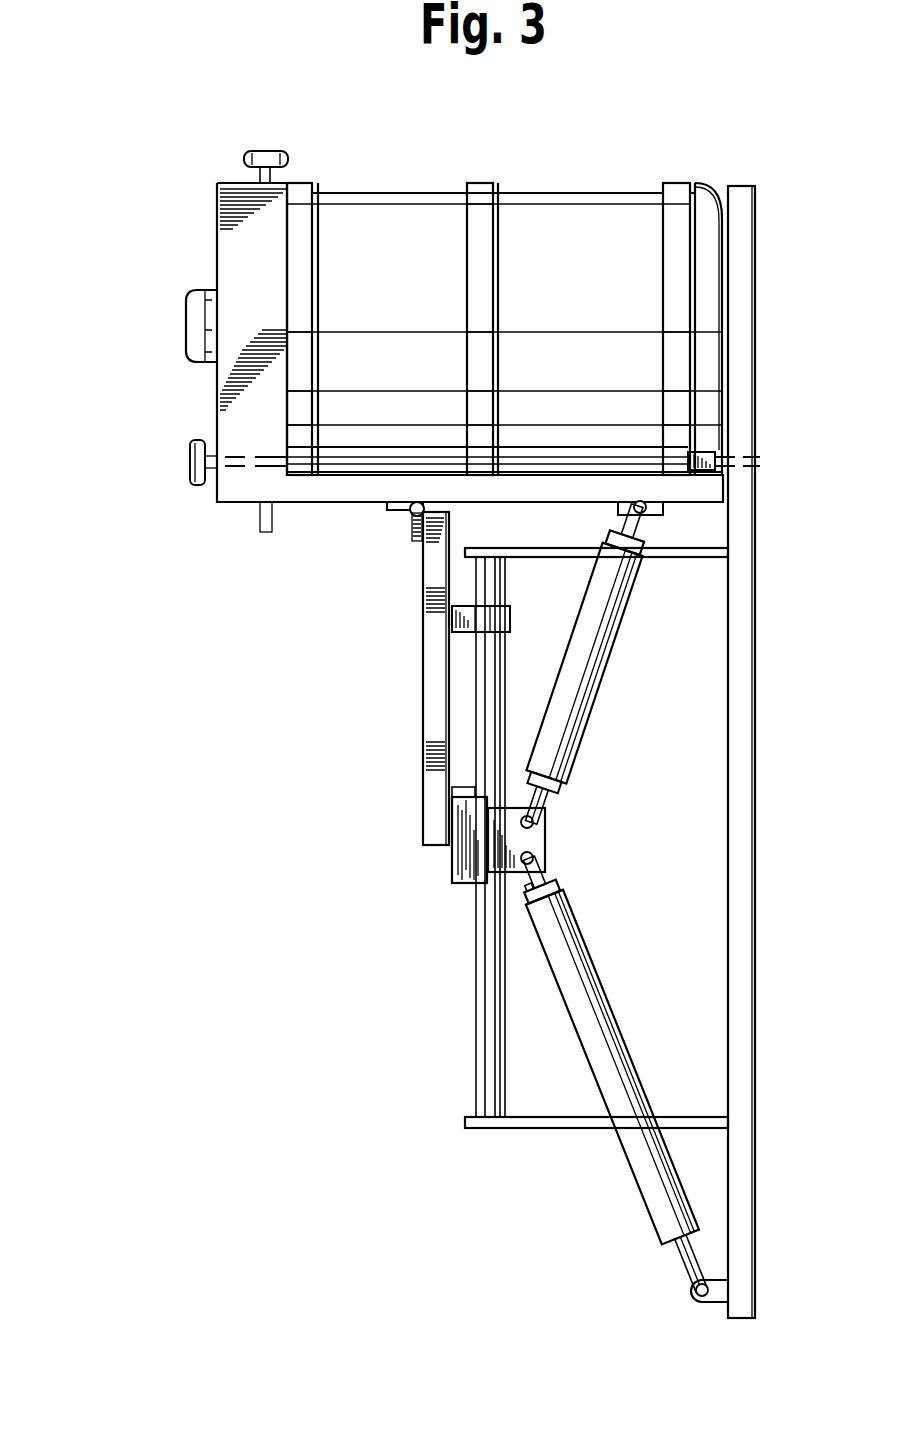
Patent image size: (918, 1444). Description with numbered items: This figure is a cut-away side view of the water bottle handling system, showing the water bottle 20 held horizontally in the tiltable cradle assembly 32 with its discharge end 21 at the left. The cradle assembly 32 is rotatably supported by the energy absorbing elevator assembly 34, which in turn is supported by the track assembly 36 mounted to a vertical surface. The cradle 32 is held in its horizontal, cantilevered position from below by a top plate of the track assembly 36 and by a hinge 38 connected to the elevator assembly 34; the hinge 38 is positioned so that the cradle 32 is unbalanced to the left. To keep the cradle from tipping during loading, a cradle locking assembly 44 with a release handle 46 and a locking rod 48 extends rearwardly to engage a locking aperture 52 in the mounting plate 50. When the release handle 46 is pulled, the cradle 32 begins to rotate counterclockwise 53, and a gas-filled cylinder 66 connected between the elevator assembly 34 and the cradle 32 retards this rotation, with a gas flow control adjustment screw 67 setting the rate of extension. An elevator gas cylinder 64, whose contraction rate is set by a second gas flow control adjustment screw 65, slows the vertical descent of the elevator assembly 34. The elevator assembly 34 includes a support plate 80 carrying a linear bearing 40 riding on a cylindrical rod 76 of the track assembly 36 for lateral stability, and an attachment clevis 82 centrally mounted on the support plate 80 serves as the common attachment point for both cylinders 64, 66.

The water bottle 20 is at (417, 192).
The discharge end 21 is at (213, 292).
The tiltable cradle assembly 32 is at (280, 606).
The energy absorbing elevator assembly 34 is at (325, 804).
The track assembly 36 is at (390, 985).
The hinge 38 is at (410, 515).
The linear bearing 40 is at (505, 650).
The cradle locking assembly 44 is at (152, 462).
The release handle 46 is at (196, 440).
The locking rod 48 is at (343, 504).
The mounting plate 50 is at (757, 262).
The locking aperture 52 is at (758, 460).
The counterclockwise rotation 53 is at (330, 434).
The elevator gas cylinder 64 is at (580, 920).
The gas flow control adjustment screw 65 is at (522, 896).
The gas-filled cylinder 66 is at (603, 668).
The gas flow control adjustment screw 67 is at (545, 798).
The cylindrical rod 76 is at (472, 1090).
The support plate 80 is at (417, 705).
The attachment clevis 82 is at (450, 856).